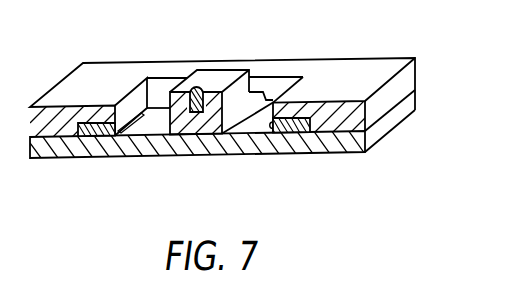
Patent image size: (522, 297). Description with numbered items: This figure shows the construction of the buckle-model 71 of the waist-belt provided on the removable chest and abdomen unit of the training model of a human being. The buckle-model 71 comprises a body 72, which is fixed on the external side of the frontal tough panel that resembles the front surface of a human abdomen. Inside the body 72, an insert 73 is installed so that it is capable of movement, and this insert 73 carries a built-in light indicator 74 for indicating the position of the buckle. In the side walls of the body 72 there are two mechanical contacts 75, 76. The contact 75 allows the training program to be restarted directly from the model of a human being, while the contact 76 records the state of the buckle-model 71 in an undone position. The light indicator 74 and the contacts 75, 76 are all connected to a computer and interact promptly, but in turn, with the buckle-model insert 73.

The buckle-model of the waist-belt 71 is at (441, 93).
The body 72 is at (335, 70).
The insert 73 is at (238, 64).
The light indicator 74 is at (203, 84).
The mechanical contact 75 is at (97, 136).
The mechanical contact 76 is at (298, 132).